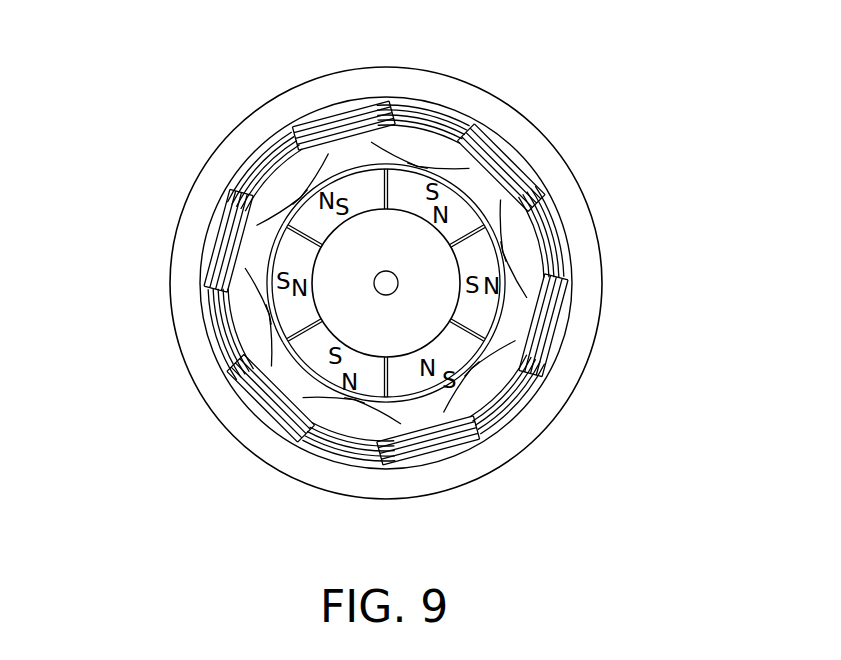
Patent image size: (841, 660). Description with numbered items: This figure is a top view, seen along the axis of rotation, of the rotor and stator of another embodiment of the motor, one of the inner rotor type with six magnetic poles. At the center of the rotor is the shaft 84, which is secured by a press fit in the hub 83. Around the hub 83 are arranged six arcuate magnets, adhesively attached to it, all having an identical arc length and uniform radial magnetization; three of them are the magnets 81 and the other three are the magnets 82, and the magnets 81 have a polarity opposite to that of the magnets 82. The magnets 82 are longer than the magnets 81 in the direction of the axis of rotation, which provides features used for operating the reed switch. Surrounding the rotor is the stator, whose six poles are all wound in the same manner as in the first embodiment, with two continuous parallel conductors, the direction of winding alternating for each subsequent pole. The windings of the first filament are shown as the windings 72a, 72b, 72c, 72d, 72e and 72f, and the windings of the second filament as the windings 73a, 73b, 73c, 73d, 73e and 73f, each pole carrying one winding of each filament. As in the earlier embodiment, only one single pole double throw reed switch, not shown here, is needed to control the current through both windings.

The first filament winding 72a is at (557, 328).
The first filament winding 72b is at (510, 168).
The first filament winding 72c is at (340, 113).
The first filament winding 72d is at (213, 247).
The first filament winding 72e is at (258, 405).
The first filament winding 72f is at (435, 450).
The second filament winding 73a is at (501, 314).
The second filament winding 73b is at (470, 198).
The second filament winding 73c is at (355, 167).
The second filament winding 73d is at (270, 252).
The second filament winding 73e is at (301, 367).
The second filament winding 73f is at (417, 398).
The arcuate magnet 81 is at (308, 220).
The arcuate magnet 82 is at (400, 185).
The hub 83 is at (337, 300).
The shaft 84 is at (398, 281).